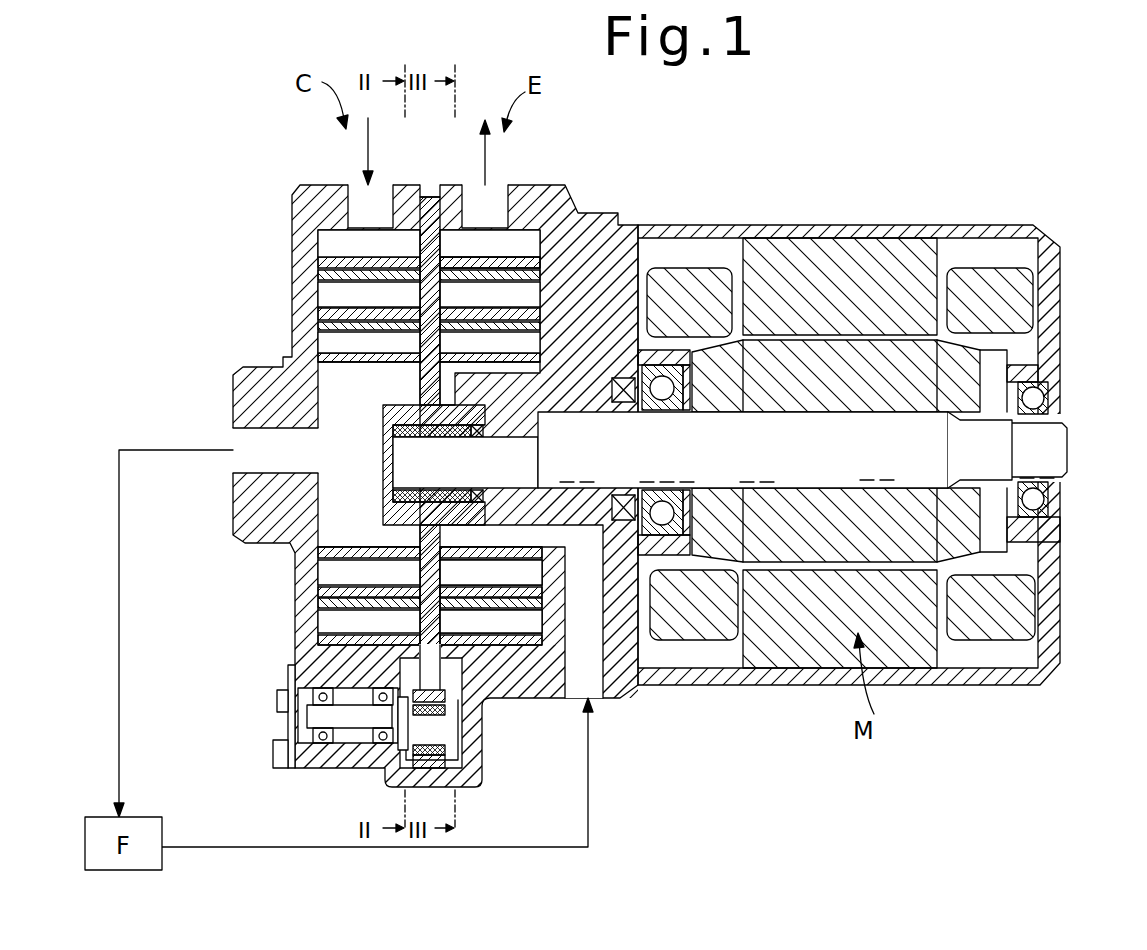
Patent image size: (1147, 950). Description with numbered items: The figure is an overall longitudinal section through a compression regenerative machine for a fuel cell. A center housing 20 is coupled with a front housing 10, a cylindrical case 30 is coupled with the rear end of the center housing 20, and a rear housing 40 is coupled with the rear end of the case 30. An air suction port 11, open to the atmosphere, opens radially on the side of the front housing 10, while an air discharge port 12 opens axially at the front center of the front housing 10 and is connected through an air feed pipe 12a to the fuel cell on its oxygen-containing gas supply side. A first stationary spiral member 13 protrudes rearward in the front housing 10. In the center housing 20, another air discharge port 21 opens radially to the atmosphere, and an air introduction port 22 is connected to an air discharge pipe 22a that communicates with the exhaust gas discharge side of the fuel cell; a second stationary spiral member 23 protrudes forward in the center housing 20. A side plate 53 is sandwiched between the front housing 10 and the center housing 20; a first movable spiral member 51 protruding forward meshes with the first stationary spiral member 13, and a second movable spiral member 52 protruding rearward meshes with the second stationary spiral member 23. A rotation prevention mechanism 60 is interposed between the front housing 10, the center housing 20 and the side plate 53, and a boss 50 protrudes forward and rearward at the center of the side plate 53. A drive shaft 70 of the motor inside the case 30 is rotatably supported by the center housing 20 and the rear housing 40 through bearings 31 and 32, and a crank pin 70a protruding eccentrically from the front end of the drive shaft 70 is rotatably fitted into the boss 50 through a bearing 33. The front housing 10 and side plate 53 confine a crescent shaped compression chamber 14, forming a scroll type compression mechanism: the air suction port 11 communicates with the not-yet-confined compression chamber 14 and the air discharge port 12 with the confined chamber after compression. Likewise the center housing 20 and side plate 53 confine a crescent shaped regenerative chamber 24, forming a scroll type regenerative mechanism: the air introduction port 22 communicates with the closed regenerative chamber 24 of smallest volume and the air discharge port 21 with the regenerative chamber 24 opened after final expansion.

The front housing 10 is at (300, 195).
The air suction port 11 is at (358, 215).
The air discharge port 12 is at (238, 433).
The air feed pipe 12a is at (119, 620).
The first stationary spiral member 13 is at (330, 292).
The compression chamber 14 is at (302, 595).
The center housing 20 is at (545, 215).
The air discharge port 21 is at (500, 212).
The air introduction port 22 is at (603, 685).
The air discharge pipe 22a is at (498, 850).
The second stationary spiral member 23 is at (500, 555).
The regenerative chamber 24 is at (527, 575).
The case 30 is at (812, 234).
The bearing 31 is at (660, 380).
The bearing 32 is at (1040, 402).
The bearing 33 is at (392, 495).
The rear housing 40 is at (1050, 290).
The boss 50 is at (394, 418).
The first movable spiral member 51 is at (360, 368).
The second movable spiral member 52 is at (530, 255).
The side plate 53 is at (428, 252).
The rotation prevention mechanism 60 is at (370, 716).
The drive shaft 70 is at (855, 464).
The crank pin 70a is at (480, 477).